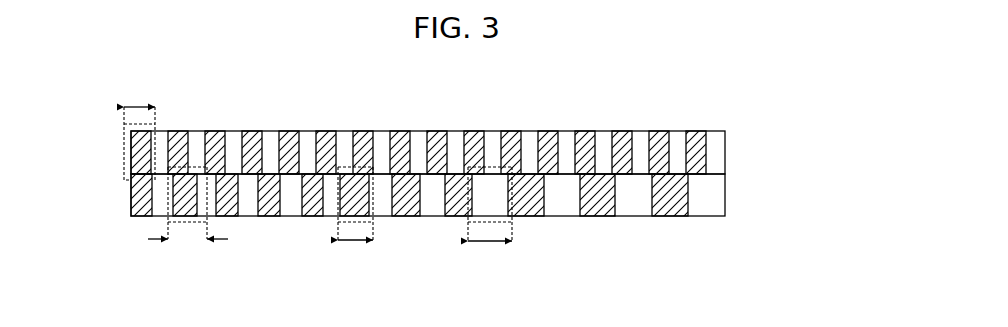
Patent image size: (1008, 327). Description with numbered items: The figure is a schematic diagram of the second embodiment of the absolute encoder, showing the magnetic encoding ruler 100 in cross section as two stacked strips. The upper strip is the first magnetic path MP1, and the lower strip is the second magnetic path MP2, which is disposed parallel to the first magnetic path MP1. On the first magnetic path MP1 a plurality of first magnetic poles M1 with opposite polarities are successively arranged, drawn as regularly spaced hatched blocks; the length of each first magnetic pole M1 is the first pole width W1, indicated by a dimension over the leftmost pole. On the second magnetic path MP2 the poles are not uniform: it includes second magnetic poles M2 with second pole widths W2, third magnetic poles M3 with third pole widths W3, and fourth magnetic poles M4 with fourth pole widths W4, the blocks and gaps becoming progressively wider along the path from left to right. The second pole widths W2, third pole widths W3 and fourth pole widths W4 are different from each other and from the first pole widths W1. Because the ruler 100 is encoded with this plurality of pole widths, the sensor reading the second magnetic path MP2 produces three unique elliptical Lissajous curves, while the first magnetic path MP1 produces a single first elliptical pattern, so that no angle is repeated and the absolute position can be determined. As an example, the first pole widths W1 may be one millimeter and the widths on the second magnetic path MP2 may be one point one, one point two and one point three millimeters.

The magnetic encoding ruler 100 is at (499, 173).
The first magnetic path MP1 is at (725, 152).
The second magnetic path MP2 is at (725, 193).
The first magnetic poles M1 is at (124, 134).
The second magnetic poles M2 is at (205, 192).
The third magnetic poles M3 is at (375, 197).
The fourth magnetic poles M4 is at (522, 198).
The first pole widths W1 is at (141, 92).
The second pole widths W2 is at (188, 254).
The third pole widths W3 is at (355, 256).
The fourth pole widths W4 is at (490, 258).